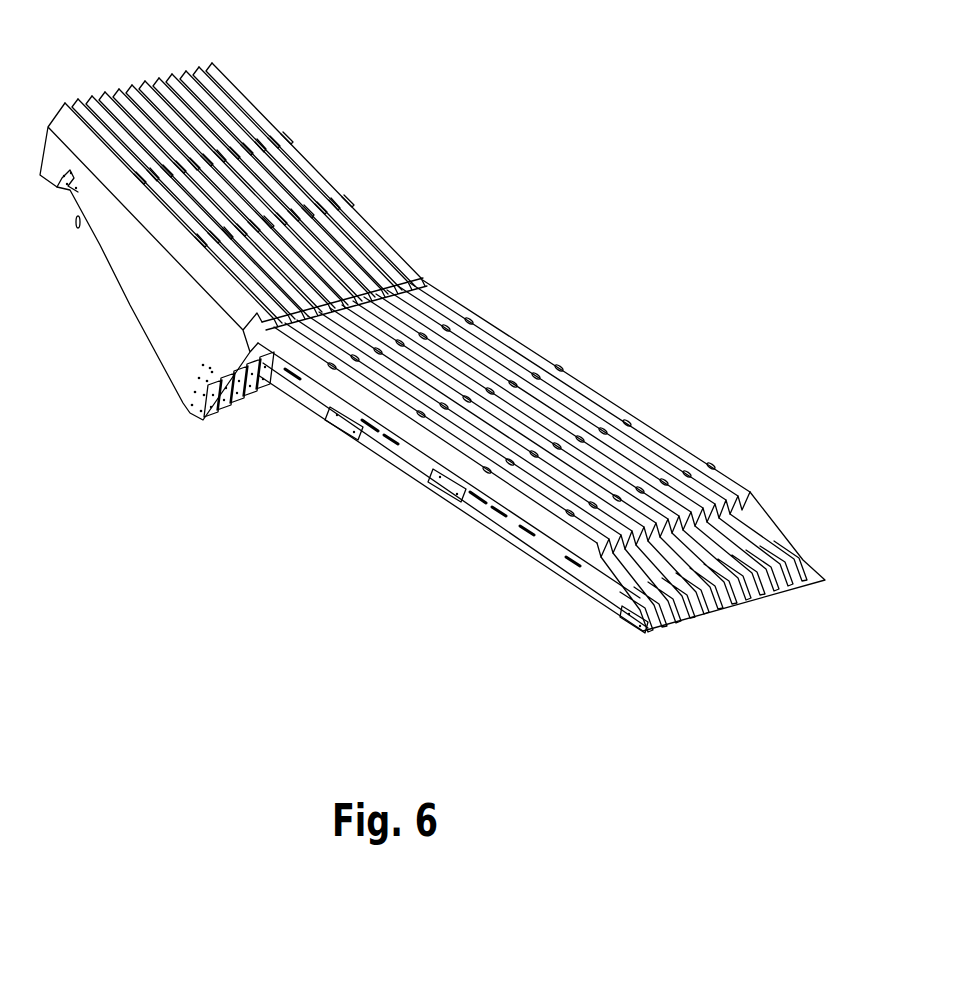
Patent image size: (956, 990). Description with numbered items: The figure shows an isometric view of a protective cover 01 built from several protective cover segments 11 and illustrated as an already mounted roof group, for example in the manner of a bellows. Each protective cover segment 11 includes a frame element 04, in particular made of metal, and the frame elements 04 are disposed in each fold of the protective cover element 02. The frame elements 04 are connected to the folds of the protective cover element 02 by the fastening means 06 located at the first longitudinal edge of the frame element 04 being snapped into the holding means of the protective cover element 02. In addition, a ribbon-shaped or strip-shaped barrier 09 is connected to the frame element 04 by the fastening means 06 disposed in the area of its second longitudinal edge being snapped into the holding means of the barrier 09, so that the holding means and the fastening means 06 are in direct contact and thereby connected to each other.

The protective cover 01 is at (538, 182).
The protective cover element 02 is at (627, 418).
The frame element 04 is at (640, 607).
The fastening means 06 is at (590, 385).
The barrier 09 is at (483, 515).
The protective cover segment 11 is at (535, 557).